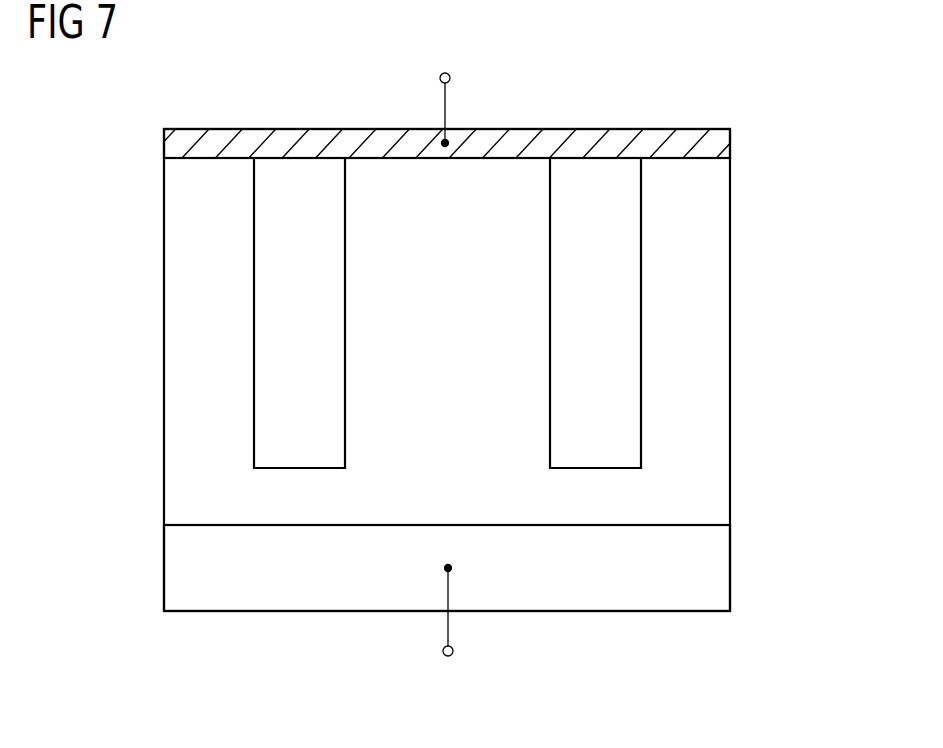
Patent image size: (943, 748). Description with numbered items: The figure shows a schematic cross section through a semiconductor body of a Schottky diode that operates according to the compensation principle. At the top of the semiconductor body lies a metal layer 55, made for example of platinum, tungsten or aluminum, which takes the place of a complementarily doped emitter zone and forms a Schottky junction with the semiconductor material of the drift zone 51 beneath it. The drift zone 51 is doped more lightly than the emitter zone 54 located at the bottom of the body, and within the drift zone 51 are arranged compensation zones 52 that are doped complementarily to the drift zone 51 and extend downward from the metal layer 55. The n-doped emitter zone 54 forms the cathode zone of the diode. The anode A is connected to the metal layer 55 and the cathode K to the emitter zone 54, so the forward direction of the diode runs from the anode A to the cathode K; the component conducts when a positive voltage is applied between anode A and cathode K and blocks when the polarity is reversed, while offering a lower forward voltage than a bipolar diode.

The drift zone 51 is at (712, 381).
The compensation zones 52 is at (625, 315).
The emitter zone 54 is at (713, 568).
The metal layer 55 is at (712, 144).
The anode A is at (459, 104).
The cathode K is at (462, 617).